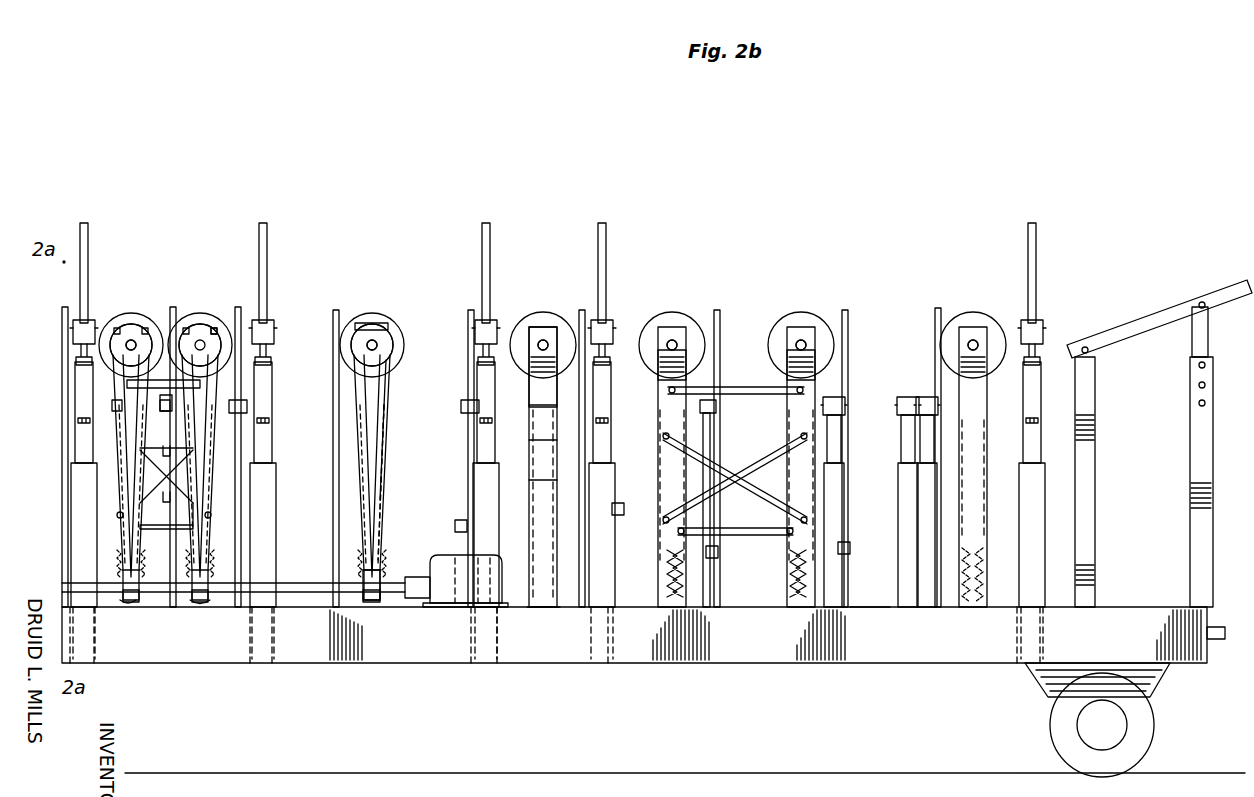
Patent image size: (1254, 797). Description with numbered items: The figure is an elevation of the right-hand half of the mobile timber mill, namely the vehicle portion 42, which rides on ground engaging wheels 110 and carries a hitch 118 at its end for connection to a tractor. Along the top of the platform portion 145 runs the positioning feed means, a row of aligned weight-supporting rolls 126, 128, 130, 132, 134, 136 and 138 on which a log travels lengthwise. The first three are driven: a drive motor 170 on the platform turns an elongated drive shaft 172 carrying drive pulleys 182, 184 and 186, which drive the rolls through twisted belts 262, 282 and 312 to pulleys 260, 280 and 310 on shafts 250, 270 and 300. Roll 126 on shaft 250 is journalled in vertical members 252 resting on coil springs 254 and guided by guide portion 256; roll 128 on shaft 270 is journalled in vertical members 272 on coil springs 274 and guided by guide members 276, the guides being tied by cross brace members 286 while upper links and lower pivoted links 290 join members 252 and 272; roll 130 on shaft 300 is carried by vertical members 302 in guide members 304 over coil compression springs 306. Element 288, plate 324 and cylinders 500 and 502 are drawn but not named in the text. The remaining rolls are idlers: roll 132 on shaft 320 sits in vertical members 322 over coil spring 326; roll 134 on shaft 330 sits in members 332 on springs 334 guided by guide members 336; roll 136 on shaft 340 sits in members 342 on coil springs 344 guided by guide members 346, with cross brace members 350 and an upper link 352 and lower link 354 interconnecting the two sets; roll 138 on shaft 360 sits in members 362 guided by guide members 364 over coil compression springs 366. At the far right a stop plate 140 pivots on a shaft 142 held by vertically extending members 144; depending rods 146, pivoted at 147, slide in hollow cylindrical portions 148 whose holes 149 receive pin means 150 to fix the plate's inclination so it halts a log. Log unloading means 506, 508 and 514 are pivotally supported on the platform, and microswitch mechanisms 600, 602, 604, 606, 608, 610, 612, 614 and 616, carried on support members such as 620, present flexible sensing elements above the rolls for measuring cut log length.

The vehicle portion 42 is at (763, 672).
The ground engaging wheels 110 is at (1065, 746).
The hitch 118 is at (1217, 653).
The weight-supporting roll 126 is at (137, 304).
The weight-supporting roll 128 is at (203, 304).
The weight-supporting roll 130 is at (368, 303).
The idler roll 132 is at (540, 304).
The idler roll 134 is at (685, 306).
The idler roll 136 is at (820, 309).
The idler roll 138 is at (973, 306).
The stop plate 140 is at (1150, 322).
The shaft 142 is at (1090, 352).
The vertically extending members 144 is at (1085, 486).
The platform portion 145 is at (868, 624).
The depending rods 146 is at (1192, 340).
The pivot 147 is at (1202, 301).
The hollow cylindrical portions 148 is at (1198, 470).
The holes 149 is at (1199, 385).
The pin means 150 is at (1199, 404).
The drive motor 170 is at (449, 607).
The drive shaft 172 is at (298, 590).
The drive pulley 182 is at (140, 619).
The drive pulley 184 is at (210, 600).
The drive pulley 186 is at (380, 602).
The shaft 250 is at (128, 340).
The vertical members 252 is at (138, 575).
The coil springs 254 is at (133, 596).
The guide portion 256 is at (110, 460).
The drive pulley 260 is at (139, 340).
The twisted belt 262 is at (118, 389).
The shaft 270 is at (208, 340).
The vertical members 272 is at (193, 545).
The coil springs 274 is at (200, 602).
The guide members 276 is at (220, 497).
The drive pulley 280 is at (218, 322).
The twisted belt 282 is at (205, 395).
The cross brace members 286 is at (166, 463).
The pulley arm 288 is at (220, 393).
The lower pivoted links 290 is at (166, 512).
The shaft 300 is at (378, 345).
The vertical members 302 is at (385, 477).
The guide members 304 is at (357, 482).
The coil compression springs 306 is at (363, 560).
The drive pulley 310 is at (369, 340).
The twisted belt 312 is at (386, 375).
The shaft 320 is at (541, 343).
The vertical members 322 is at (555, 330).
The support plate 324 is at (533, 416).
The coil spring 326 is at (546, 627).
The shaft 330 is at (670, 341).
The vertical members 332 is at (678, 357).
The coil compression springs 334 is at (680, 580).
The guide members 336 is at (655, 455).
The shaft 340 is at (806, 343).
The vertical members 342 is at (810, 382).
The coil springs 344 is at (788, 593).
The guide members 346 is at (813, 482).
The cross brace members 350 is at (747, 470).
The upper link 352 is at (718, 392).
The lower link 354 is at (707, 530).
The shaft 360 is at (968, 344).
The vertical members 362 is at (930, 398).
The guide members 364 is at (920, 430).
The coil compression springs 366 is at (974, 612).
The hydraulic cylinder 500 is at (102, 261).
The hydraulic cylinder 502 is at (276, 302).
The log unloading means 506 is at (463, 286).
The log unloading means 508 is at (617, 292).
The log unloading means 514 is at (1050, 320).
The microswitch mechanism 600 is at (62, 356).
The microswitch mechanism 602 is at (175, 313).
The microswitch mechanism 604 is at (241, 407).
The microswitch mechanism 606 is at (333, 383).
The microswitch mechanism 608 is at (468, 382).
The microswitch mechanism 610 is at (585, 373).
The microswitch mechanism 612 is at (720, 357).
The microswitch mechanism 614 is at (848, 325).
The microswitch mechanism 616 is at (935, 327).
The support member 620 is at (240, 448).